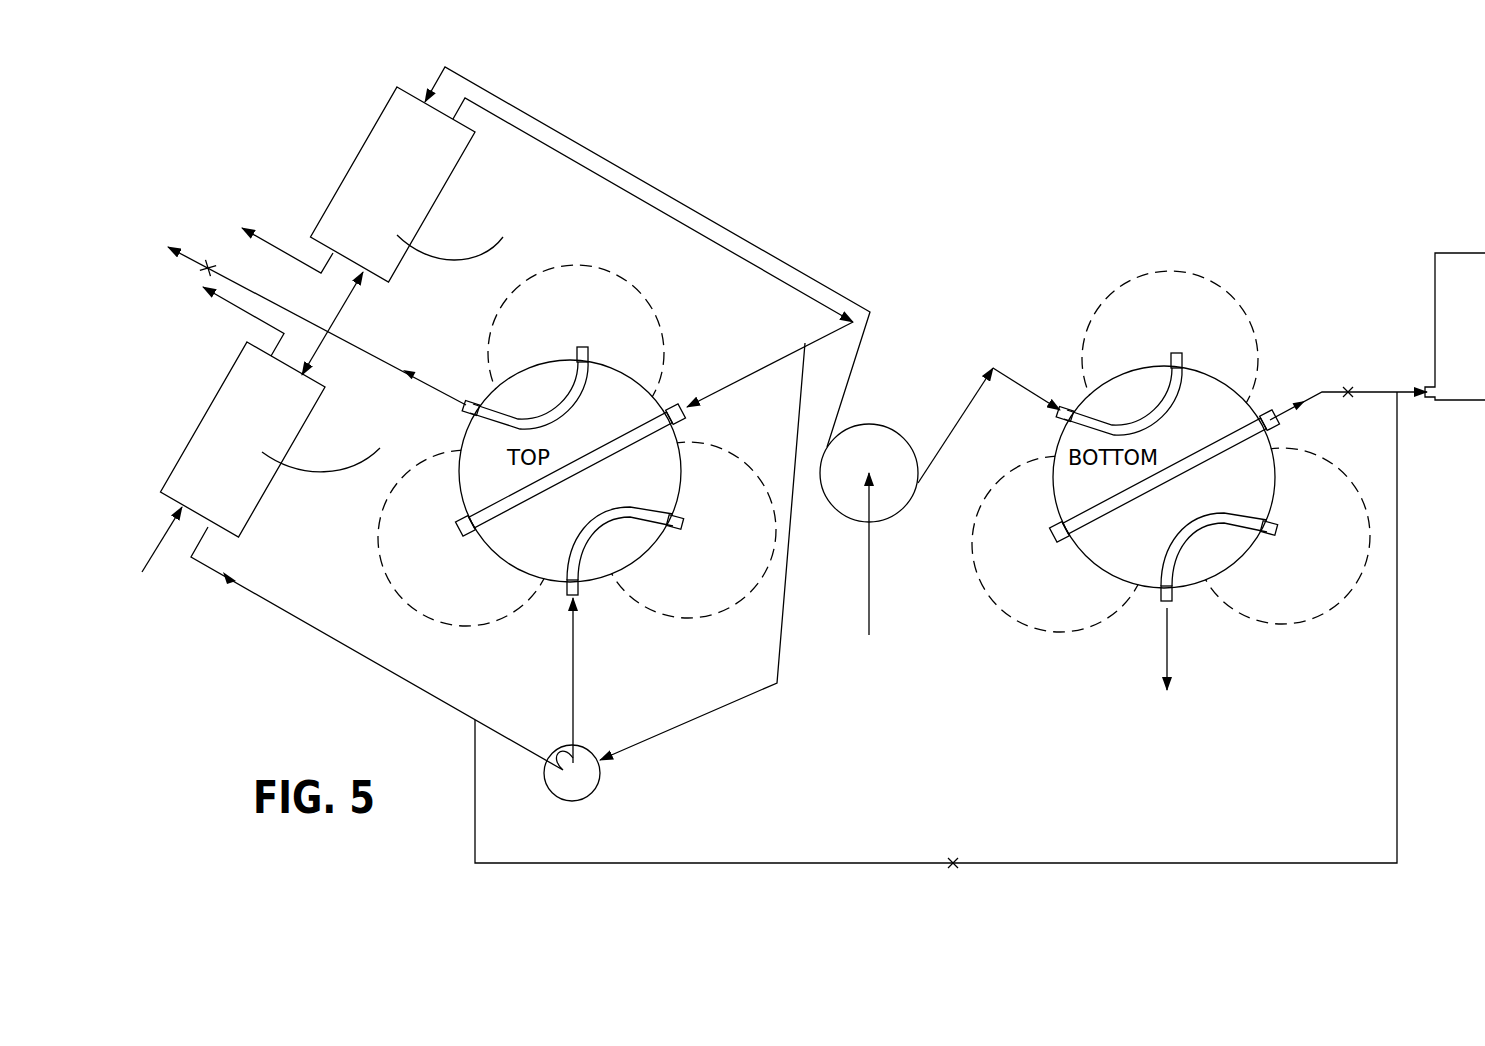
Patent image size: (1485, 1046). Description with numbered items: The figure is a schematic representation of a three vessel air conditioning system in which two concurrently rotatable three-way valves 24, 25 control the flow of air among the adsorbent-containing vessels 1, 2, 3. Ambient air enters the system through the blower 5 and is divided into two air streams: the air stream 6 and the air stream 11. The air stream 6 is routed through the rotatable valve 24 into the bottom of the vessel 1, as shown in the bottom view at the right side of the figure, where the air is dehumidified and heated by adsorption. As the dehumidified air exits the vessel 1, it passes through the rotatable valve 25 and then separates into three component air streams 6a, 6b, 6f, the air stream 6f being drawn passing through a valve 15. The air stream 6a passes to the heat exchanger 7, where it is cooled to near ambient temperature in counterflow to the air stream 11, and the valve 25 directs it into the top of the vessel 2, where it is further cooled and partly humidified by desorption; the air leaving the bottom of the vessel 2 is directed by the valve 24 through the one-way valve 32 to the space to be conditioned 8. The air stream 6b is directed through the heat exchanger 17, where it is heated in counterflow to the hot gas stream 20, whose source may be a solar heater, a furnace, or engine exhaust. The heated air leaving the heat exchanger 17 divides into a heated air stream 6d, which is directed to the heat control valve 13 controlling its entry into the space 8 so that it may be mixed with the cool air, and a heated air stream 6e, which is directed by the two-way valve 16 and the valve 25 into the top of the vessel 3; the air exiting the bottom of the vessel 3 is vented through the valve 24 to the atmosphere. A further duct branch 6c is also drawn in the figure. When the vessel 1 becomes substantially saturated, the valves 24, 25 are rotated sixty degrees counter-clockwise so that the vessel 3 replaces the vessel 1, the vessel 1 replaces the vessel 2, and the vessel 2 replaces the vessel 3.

The vessel 1 is at (589, 316).
The vessel 2 is at (428, 584).
The vessel 3 is at (729, 566).
The blower 5 is at (888, 517).
The air stream 6 is at (975, 382).
The air stream 6a is at (770, 276).
The air stream 6b is at (318, 350).
The duct branch 6c is at (675, 727).
The heated air stream 6d is at (885, 863).
The heated air stream 6e is at (291, 613).
The air stream 6f is at (255, 294).
The heat exchanger 7 is at (380, 132).
The space to be conditioned 8 is at (1455, 285).
The air stream 11 is at (802, 270).
The heat control valve 13 is at (955, 867).
The valve 15 is at (208, 267).
The two-way valve 16 is at (577, 792).
The heat exchanger 17 is at (245, 356).
The hot gas stream 20 is at (160, 556).
The rotatable three-way valve 24 is at (1143, 577).
The rotatable three-way valve 25 is at (557, 560).
The one-way valve 32 is at (1348, 390).